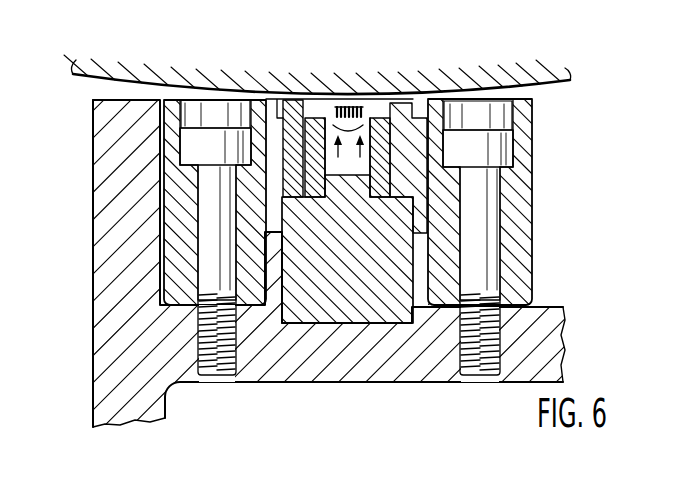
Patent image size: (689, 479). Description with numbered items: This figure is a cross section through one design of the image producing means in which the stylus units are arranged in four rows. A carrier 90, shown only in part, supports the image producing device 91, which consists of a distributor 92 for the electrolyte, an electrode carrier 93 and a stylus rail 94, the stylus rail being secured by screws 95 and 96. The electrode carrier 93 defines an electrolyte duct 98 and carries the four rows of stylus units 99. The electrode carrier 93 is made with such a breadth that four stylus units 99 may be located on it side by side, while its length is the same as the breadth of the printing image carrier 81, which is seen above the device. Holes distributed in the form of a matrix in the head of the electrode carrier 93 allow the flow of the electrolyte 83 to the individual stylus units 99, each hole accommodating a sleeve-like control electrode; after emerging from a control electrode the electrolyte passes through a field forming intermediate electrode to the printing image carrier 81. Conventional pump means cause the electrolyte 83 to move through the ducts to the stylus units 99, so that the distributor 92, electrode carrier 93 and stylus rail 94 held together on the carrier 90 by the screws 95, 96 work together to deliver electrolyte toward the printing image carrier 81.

The printing image carrier 81 is at (538, 81).
The electrolyte 83 is at (381, 145).
The carrier 90 is at (120, 344).
The image producing device 91 is at (290, 88).
The distributor 92 is at (351, 310).
The electrode carrier 93 is at (385, 172).
The stylus rail 94 is at (402, 150).
The screw 95 is at (215, 137).
The screw 96 is at (475, 140).
The electrolyte duct 98 is at (350, 141).
The stylus units 99 is at (338, 93).